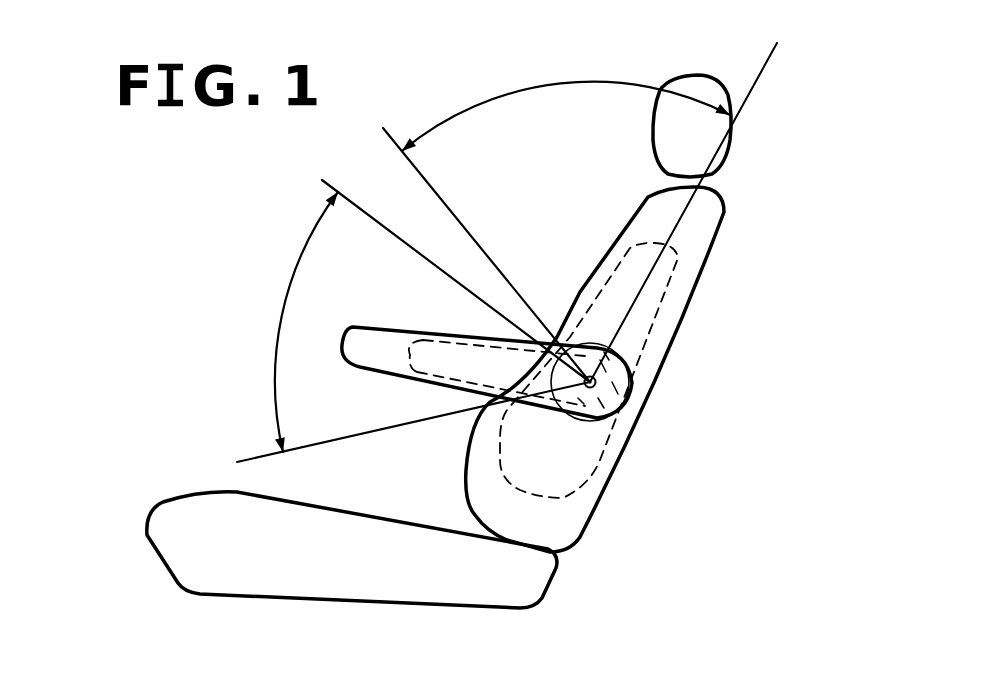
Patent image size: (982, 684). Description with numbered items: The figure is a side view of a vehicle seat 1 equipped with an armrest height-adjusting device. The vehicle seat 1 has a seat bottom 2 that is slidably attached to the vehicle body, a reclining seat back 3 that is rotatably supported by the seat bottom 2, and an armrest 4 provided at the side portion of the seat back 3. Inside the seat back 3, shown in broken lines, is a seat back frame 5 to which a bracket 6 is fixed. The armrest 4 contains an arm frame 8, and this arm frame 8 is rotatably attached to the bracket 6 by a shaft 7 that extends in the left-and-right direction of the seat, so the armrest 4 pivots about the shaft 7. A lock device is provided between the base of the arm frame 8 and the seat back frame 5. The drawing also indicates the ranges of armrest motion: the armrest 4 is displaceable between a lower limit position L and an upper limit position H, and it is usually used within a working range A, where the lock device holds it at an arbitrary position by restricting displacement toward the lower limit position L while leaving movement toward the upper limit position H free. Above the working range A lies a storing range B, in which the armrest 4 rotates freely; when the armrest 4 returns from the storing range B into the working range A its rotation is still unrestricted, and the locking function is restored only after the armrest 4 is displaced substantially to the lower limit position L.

The vehicle seat 1 is at (727, 214).
The seat bottom 2 is at (263, 558).
The seat back 3 is at (683, 302).
The armrest 4 is at (368, 347).
The seat back frame 5 is at (670, 330).
The bracket 6 is at (623, 375).
The shaft 7 is at (624, 410).
The arm frame 8 is at (417, 373).
The working range A is at (273, 348).
The storing range B is at (485, 105).
The upper limit position H is at (691, 197).
The lower limit position L is at (401, 431).